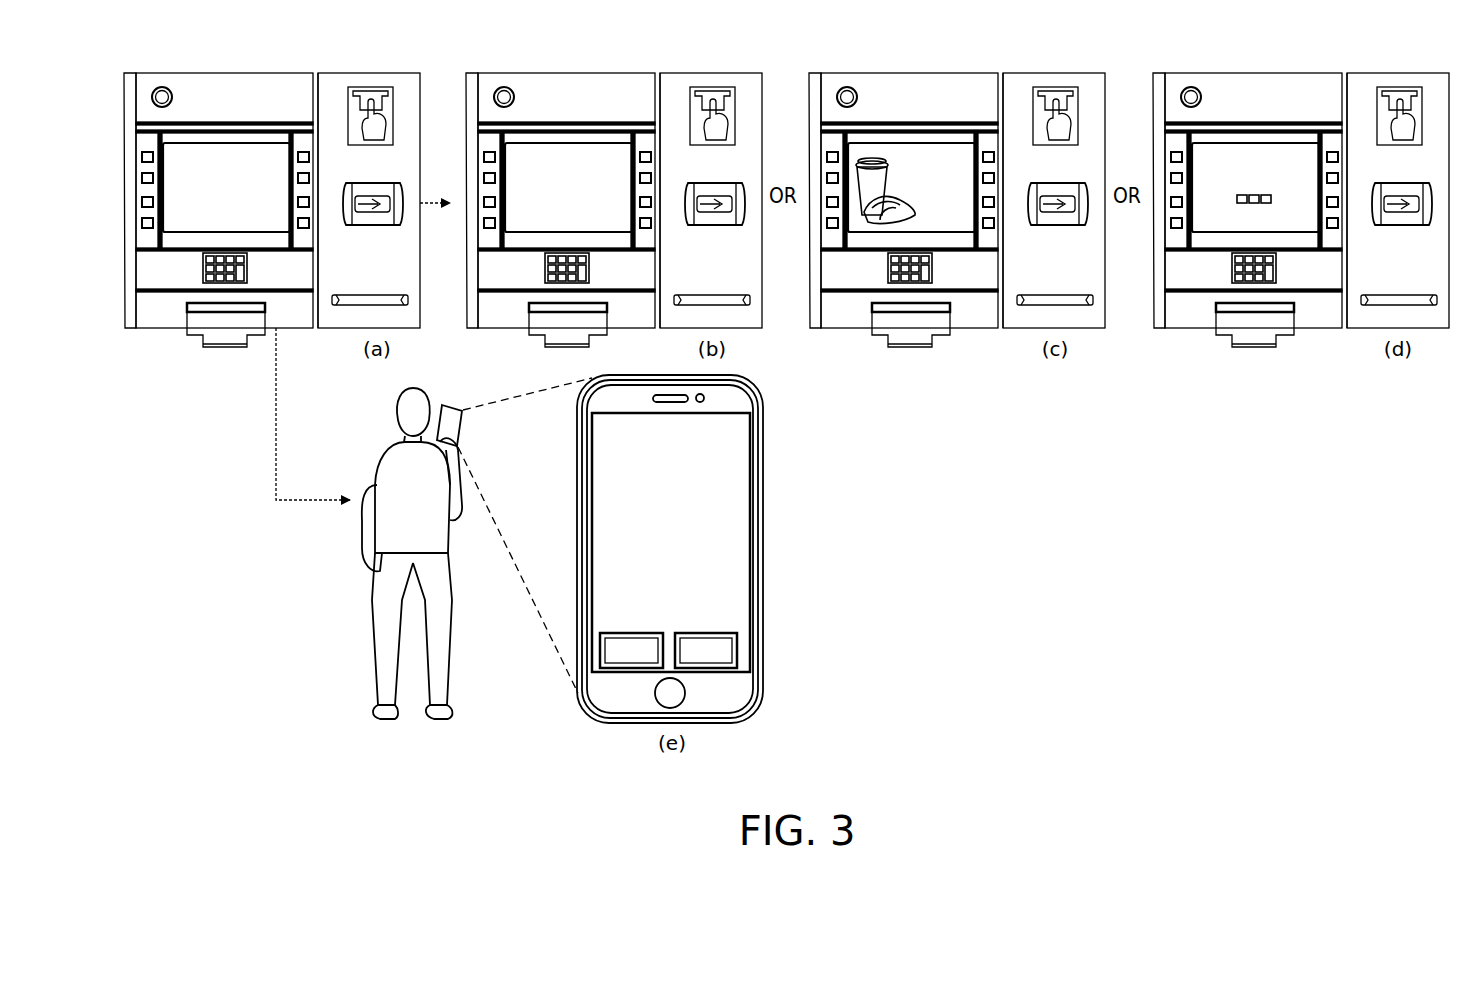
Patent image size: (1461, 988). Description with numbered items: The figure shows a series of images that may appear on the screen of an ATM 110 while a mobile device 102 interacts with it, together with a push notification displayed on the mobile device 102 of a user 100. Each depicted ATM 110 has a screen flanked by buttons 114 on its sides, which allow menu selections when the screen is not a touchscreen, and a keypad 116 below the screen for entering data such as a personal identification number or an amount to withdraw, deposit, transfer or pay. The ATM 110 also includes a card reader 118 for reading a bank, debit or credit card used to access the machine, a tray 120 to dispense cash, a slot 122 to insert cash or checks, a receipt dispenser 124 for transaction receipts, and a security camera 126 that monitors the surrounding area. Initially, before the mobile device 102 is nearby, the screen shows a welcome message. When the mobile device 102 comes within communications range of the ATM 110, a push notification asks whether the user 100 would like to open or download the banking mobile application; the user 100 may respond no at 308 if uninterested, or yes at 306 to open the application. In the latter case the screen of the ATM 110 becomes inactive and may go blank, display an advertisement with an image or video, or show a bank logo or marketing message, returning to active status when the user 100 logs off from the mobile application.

The user 100 is at (368, 458).
The mobile device 102 is at (770, 466).
The ATM 110 is at (294, 73).
The buttons 114 is at (148, 152).
The keypad 116 is at (203, 270).
The card reader 118 is at (357, 183).
The tray 120 is at (213, 312).
The slot 122 is at (340, 306).
The receipt dispenser 124 is at (377, 87).
The security camera 126 is at (161, 87).
The yes response 306 is at (630, 668).
The no response 308 is at (703, 668).